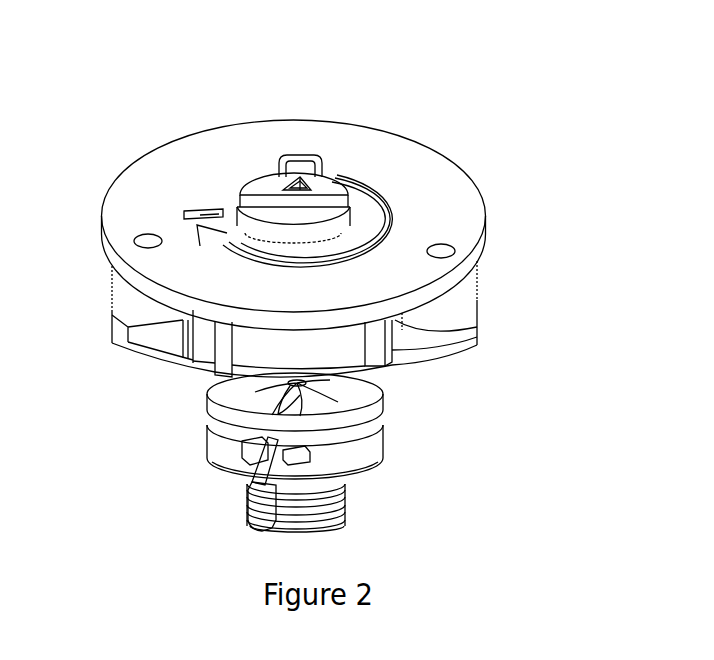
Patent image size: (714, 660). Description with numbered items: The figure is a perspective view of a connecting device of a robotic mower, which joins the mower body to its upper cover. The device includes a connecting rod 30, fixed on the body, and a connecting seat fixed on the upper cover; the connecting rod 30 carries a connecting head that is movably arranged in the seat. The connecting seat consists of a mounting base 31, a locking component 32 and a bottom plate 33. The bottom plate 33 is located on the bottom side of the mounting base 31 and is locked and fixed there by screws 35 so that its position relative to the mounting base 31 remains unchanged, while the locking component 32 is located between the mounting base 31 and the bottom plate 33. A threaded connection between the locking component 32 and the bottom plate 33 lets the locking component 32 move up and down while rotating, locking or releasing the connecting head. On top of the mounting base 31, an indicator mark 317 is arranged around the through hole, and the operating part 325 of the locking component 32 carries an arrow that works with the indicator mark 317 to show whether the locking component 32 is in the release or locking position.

The connecting rod 30 is at (355, 432).
The mounting base 31 is at (423, 190).
The locking component 32 is at (323, 222).
The operating part 325 is at (323, 183).
The indicator mark 317 is at (187, 210).
The bottom plate 33 is at (413, 357).
The screws 35 is at (142, 352).